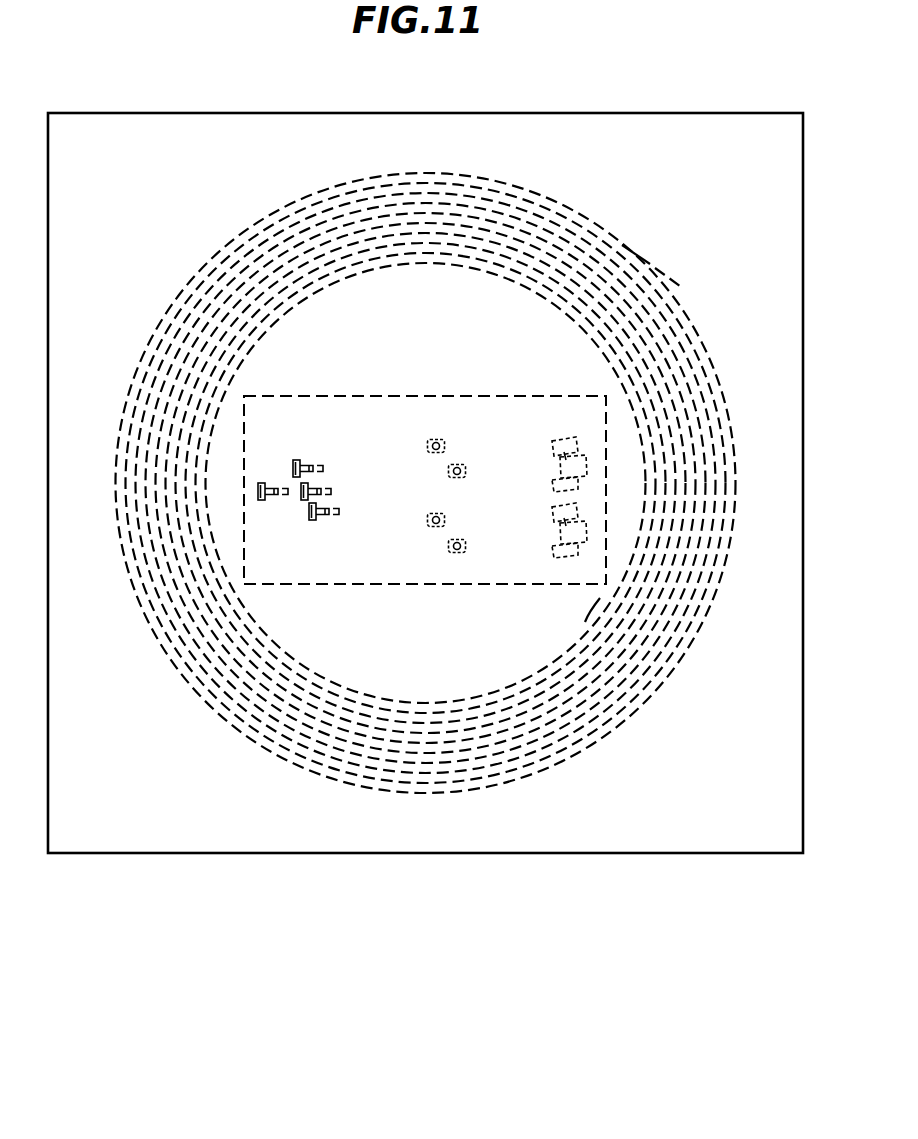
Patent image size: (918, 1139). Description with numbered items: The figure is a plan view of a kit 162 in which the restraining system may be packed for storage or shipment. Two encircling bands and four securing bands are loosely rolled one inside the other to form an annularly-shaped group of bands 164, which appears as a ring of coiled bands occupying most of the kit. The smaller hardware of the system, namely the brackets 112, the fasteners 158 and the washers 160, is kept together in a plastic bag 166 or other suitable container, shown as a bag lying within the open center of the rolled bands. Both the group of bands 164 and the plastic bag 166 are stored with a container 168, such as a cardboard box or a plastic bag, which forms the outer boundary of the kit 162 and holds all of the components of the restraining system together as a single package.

The brackets 112 is at (536, 552).
The fasteners 158 is at (321, 441).
The washers 160 is at (440, 433).
The kit 162 is at (425, 515).
The annularly-shaped group of bands 164 is at (648, 238).
The plastic bag 166 is at (280, 396).
The container 168 is at (483, 113).